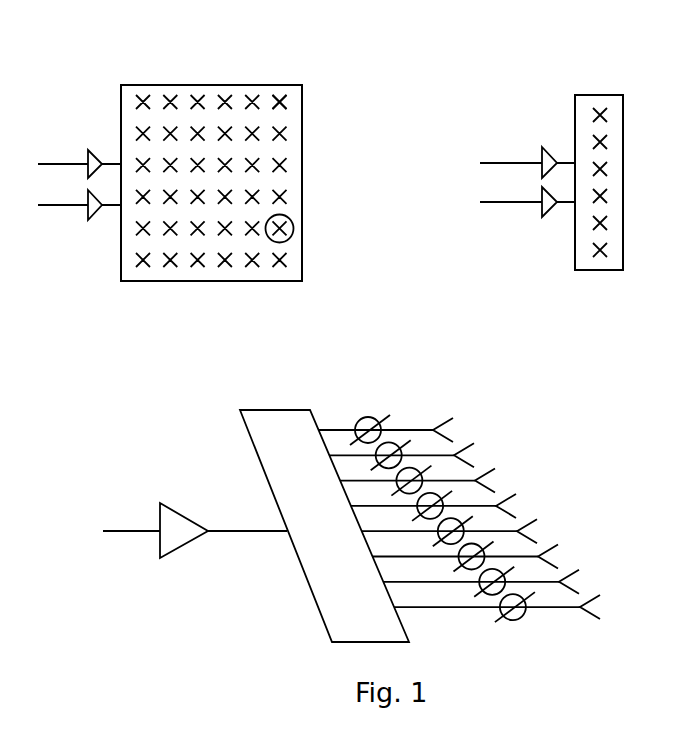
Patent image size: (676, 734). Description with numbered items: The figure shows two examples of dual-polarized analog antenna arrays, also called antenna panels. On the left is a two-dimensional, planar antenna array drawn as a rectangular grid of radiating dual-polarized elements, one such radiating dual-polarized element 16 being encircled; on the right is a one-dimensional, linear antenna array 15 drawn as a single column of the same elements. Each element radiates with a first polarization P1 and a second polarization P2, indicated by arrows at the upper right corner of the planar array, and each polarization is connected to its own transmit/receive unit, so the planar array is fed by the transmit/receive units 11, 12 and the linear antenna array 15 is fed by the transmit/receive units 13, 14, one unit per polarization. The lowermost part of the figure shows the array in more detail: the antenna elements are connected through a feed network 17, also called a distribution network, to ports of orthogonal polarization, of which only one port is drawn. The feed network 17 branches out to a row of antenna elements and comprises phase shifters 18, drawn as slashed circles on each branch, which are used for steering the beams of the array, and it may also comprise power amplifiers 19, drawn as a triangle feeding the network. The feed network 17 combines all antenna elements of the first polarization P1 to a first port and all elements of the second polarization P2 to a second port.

The transmit/receive unit 11 is at (62, 164).
The transmit/receive unit 12 is at (68, 206).
The transmit/receive unit 13 is at (500, 160).
The transmit/receive unit 14 is at (513, 203).
The one-dimensional antenna array 15 is at (613, 102).
The radiating dual-polarized element 16 is at (293, 229).
The feed network 17 is at (295, 452).
The phase shifter 18 is at (377, 420).
The power amplifier 19 is at (192, 517).
The first polarization P1 is at (281, 76).
The second polarization P2 is at (299, 97).